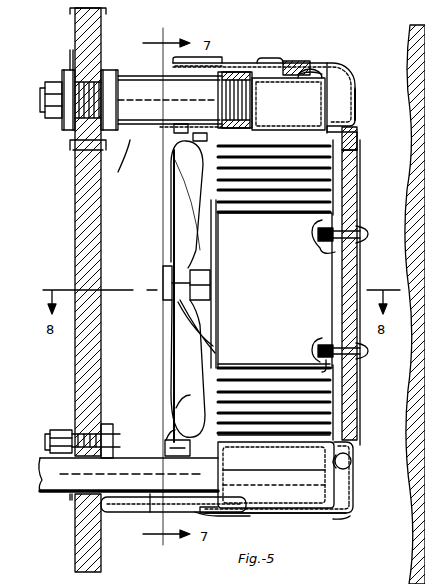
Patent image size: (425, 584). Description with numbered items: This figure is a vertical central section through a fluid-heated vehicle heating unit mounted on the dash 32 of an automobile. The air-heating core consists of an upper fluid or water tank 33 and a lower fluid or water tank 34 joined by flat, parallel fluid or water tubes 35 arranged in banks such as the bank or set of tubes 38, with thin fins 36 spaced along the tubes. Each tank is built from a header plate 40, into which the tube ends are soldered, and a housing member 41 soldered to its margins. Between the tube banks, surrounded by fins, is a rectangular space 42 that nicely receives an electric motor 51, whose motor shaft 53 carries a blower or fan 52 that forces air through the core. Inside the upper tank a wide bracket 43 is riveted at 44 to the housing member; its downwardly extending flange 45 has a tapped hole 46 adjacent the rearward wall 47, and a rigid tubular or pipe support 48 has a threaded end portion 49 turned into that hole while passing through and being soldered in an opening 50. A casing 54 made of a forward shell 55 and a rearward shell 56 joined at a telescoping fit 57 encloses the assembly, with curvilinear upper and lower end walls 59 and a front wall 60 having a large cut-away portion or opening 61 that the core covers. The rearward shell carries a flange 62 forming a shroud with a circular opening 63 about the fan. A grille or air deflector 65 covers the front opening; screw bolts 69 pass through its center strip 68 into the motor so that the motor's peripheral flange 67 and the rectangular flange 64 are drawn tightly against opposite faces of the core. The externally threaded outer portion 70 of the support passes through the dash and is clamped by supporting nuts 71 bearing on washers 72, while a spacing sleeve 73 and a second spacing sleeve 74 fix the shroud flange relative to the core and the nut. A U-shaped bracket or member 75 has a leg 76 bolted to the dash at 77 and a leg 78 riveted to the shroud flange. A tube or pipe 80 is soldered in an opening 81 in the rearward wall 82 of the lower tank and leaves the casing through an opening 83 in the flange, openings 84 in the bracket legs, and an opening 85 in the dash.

The dash 32 is at (99, 224).
The upper fluid or water tank 33 is at (350, 95).
The lower fluid or water tank 34 is at (318, 490).
The fluid or water tubes 35 is at (322, 390).
The fins 36 is at (328, 185).
The bank or set of tubes 38 is at (320, 436).
The header plate 40 is at (310, 126).
The housing member 41 is at (352, 78).
The rectangular space 42 is at (327, 366).
The bracket 43 is at (289, 70).
The rivet securement 44 is at (308, 63).
The downwardly extending flange 45 is at (243, 126).
The tapped hole 46 is at (252, 105).
The rearward wall 47 is at (203, 146).
The tubular or pipe support 48 is at (146, 90).
The threaded end portion 49 is at (252, 91).
The opening 50 is at (222, 82).
The electric motor 51 is at (320, 285).
The blower or fan 52 is at (186, 371).
The motor shaft 53 is at (196, 278).
The casing 54 is at (312, 518).
The forward shell 55 is at (348, 506).
The rearward shell 56 is at (240, 62).
The telescoping fit 57 is at (269, 60).
The curvilinear upper and lower end walls 59 is at (297, 64).
The front wall 60 is at (357, 97).
The cut-away portion or opening 61 is at (352, 467).
The flange 62 is at (166, 440).
The circular opening 63 is at (176, 408).
The rectangular flange 64 is at (360, 140).
The grille or air deflector 65 is at (360, 183).
The peripheral flange 67 is at (215, 328).
The center strip 68 is at (355, 207).
The screw bolts 69 is at (365, 227).
The outer portion 70 is at (52, 128).
The supporting nuts 71 is at (63, 75).
The washer 72 is at (72, 60).
The spacing sleeve 73 is at (200, 138).
The second spacing sleeve 74 is at (120, 164).
The bracket or member 75 is at (142, 504).
The leg 76 is at (102, 428).
The bolt 77 is at (53, 430).
The leg 78 is at (170, 450).
The tube or pipe 80 is at (56, 484).
The opening 81 is at (225, 477).
The rearward wall 82 is at (225, 491).
The opening 83 is at (207, 511).
The openings 84 is at (150, 512).
The opening 85 is at (72, 500).